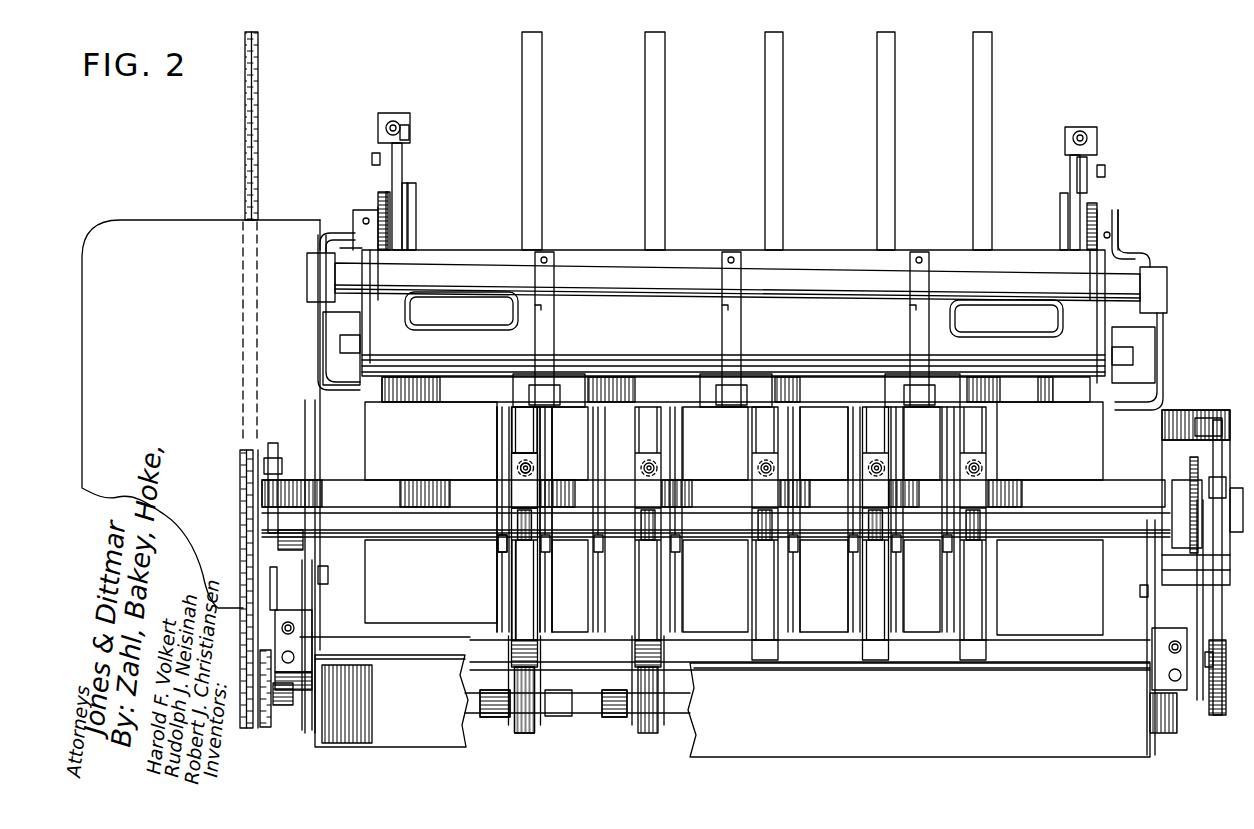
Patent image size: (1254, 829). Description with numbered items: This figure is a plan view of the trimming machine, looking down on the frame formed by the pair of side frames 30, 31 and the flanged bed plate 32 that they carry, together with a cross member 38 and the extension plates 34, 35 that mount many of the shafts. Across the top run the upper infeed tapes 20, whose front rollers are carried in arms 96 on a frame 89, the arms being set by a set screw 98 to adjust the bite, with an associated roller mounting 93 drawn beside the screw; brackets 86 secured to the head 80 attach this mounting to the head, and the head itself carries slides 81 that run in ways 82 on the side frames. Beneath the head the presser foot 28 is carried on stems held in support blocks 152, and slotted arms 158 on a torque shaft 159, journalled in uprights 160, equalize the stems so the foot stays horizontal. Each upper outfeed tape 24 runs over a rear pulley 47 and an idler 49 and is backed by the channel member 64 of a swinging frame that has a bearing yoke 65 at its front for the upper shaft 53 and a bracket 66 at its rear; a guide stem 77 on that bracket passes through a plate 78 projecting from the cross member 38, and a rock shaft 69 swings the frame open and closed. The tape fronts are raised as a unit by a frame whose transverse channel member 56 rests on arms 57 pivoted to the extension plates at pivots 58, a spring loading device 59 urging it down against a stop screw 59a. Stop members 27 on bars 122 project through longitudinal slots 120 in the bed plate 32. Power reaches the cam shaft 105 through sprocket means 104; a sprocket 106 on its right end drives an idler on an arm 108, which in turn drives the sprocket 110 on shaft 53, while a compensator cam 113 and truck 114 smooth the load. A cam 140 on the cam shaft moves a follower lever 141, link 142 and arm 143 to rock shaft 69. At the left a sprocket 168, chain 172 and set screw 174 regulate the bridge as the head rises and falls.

The upper infeed tape 20 is at (760, 140).
The upper outfeed tape 24 is at (512, 438).
The stop member 27 is at (496, 553).
The presser foot 28 is at (452, 400).
The side frame 30 is at (318, 249).
The side frame 31 is at (1152, 254).
The flanged bed plate 32 is at (418, 600).
The extension plate 34 is at (318, 376).
The extension plate 35 is at (1165, 406).
The cross member 38 is at (418, 482).
The pulley 47 is at (540, 428).
The idler 49 is at (512, 652).
The upper shaft 53 is at (590, 716).
The transverse channel member 56 is at (392, 748).
The arm 57 is at (314, 592).
The pivot 58 is at (325, 575).
The spring loading device 59 is at (296, 628).
The stop screw 59a is at (296, 655).
The longitudinally extending channel member 64 is at (546, 446).
The bearing yoke 65 is at (512, 673).
The bracket 66 is at (510, 468).
The rock shaft 69 is at (425, 530).
The guide stem 77 is at (540, 466).
The plate 78 is at (520, 496).
The head 80 is at (668, 336).
The slide 81 is at (345, 345).
The way 82 is at (345, 327).
The bracket 86 is at (418, 234).
The frame 89 is at (410, 208).
The switch 93 is at (367, 130).
The arm 96 is at (404, 173).
The set screw 98 is at (404, 129).
The sprocket means 104 is at (236, 152).
The cam shaft 105 is at (256, 493).
The sprocket 106 is at (1192, 470).
The arm 108 is at (1212, 650).
The sprocket 110 is at (1168, 735).
The compensator cam 113 is at (1215, 441).
The truck 114 is at (1218, 420).
The slot 120 is at (500, 603).
The bar 122 is at (496, 583).
The cam 140 is at (268, 448).
The follower lever 141 is at (286, 458).
The link 142 is at (270, 585).
The arm 143 is at (278, 550).
The support block 152 is at (523, 384).
The slotted arm 158 is at (556, 327).
The torque shaft 159 is at (803, 278).
The upright 160 is at (1170, 283).
The sprocket 168 is at (384, 207).
The chain 172 is at (380, 193).
The set screw 174 is at (362, 221).